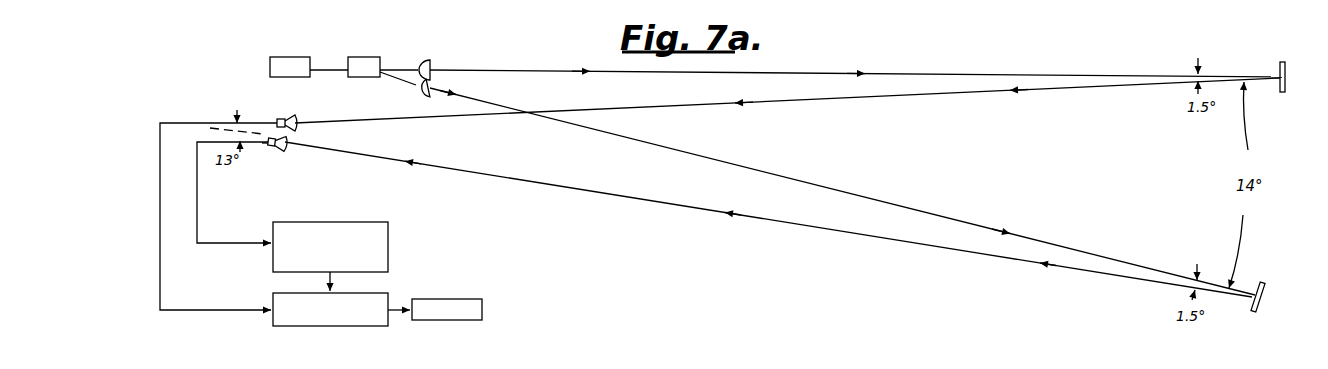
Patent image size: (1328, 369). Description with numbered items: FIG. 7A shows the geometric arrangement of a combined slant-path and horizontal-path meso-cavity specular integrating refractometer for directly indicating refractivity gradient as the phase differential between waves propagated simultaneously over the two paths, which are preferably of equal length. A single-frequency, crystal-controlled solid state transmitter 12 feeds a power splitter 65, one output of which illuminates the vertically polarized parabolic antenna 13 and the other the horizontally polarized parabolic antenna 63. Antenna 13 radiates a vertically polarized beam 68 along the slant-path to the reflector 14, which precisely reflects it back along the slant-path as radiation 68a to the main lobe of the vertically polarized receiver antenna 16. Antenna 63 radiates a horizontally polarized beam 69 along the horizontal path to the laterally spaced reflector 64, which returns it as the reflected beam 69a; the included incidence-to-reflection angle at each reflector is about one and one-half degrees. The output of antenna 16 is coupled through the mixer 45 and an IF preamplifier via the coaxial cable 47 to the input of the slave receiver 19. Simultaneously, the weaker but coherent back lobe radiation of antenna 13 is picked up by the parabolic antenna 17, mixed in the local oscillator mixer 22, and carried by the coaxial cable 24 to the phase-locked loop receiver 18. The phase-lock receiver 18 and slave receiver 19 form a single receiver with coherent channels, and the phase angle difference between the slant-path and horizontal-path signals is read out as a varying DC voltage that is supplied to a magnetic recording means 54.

The transmitter 12 is at (291, 64).
The power splitter 65 is at (364, 64).
The transmitter parabolic antenna 13 is at (432, 66).
The transmitter parabolic antenna 63 is at (416, 92).
The vertically polarized beam 68 is at (855, 73).
The reflected main lobe radiation 68a is at (916, 97).
The horizontally polarized beam 69 is at (927, 214).
The reflected beam 69a is at (874, 237).
The reflector 14 is at (1286, 77).
The reflector 64 is at (1263, 300).
The vertically polarized receiver antenna 16 is at (283, 116).
The parabolic antenna 17 is at (288, 146).
The mixer 45 is at (278, 118).
The local oscillator mixer 22 is at (270, 148).
The coaxial cable 47 is at (160, 204).
The coaxial cable 24 is at (197, 209).
The phase-locked loop receiver 18 is at (389, 242).
The slave receiver 19 is at (353, 327).
The magnetic recording means 54 is at (448, 321).